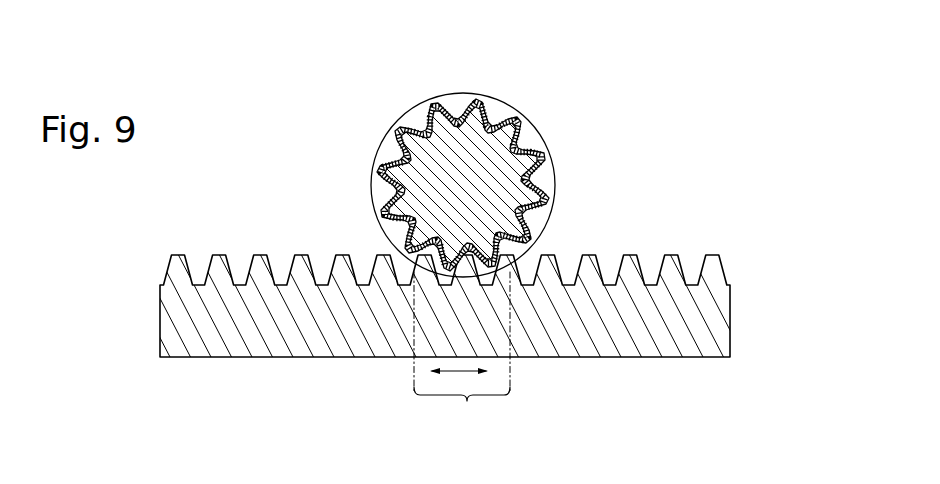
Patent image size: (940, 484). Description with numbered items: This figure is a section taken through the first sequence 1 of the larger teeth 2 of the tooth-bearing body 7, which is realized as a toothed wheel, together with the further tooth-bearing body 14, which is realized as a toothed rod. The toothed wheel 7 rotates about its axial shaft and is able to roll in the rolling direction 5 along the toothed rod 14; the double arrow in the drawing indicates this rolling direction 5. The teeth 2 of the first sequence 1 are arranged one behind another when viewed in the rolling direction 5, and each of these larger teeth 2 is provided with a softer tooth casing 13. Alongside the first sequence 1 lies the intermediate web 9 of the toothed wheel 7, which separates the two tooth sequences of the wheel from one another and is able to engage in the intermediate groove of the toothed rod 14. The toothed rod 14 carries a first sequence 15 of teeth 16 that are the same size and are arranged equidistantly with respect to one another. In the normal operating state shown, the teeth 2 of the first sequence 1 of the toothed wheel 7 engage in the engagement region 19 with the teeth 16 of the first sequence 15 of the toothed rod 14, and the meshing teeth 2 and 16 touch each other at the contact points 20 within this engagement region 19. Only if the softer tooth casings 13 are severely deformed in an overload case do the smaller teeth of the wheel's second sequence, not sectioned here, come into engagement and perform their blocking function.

The first sequence of teeth 1 is at (388, 188).
The teeth 2 is at (375, 153).
The rolling direction 5 is at (420, 380).
The tooth-bearing body 7 is at (547, 130).
The intermediate web 9 is at (537, 145).
The tooth casings 13 is at (479, 93).
The further tooth-bearing body 14 is at (647, 328).
The first sequence of teeth 15 is at (735, 270).
The teeth 16 is at (672, 257).
The engagement region 19 is at (462, 355).
The contact points 20 is at (446, 270).